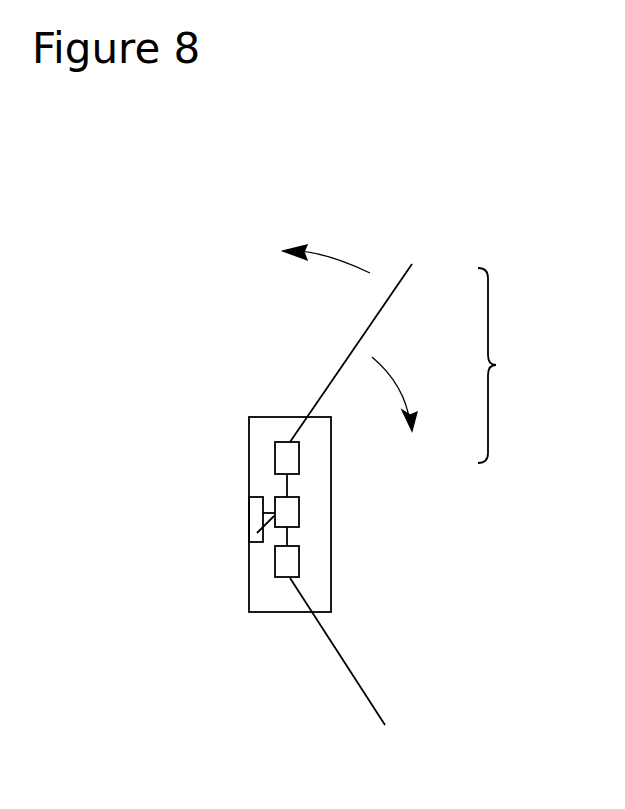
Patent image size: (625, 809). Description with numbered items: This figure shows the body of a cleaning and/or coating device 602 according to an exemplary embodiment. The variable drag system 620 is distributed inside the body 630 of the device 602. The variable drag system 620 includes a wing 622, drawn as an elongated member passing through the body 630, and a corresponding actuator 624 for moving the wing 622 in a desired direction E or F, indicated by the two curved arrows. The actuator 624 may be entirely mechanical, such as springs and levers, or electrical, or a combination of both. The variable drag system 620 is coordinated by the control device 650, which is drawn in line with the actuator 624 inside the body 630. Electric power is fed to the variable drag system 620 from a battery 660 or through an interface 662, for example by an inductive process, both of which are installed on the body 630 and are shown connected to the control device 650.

The cleaning and/or coating device 602 is at (264, 190).
The variable drag system 620 is at (407, 480).
The wing 622 is at (378, 318).
The actuator 624 is at (300, 460).
The body 630 is at (259, 432).
The control device 650 is at (300, 515).
The battery 660 is at (258, 510).
The interface 662 is at (257, 533).